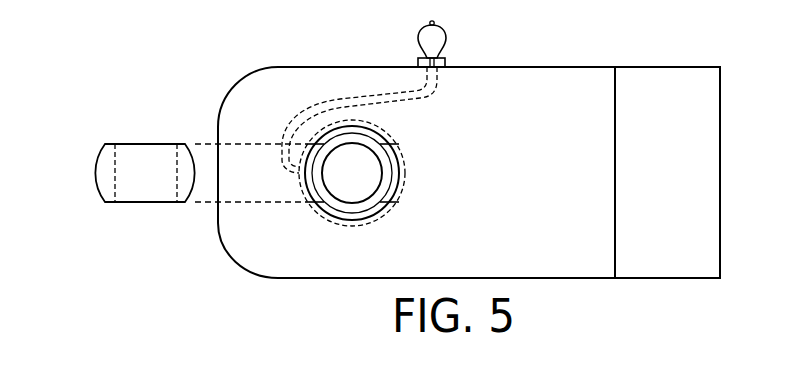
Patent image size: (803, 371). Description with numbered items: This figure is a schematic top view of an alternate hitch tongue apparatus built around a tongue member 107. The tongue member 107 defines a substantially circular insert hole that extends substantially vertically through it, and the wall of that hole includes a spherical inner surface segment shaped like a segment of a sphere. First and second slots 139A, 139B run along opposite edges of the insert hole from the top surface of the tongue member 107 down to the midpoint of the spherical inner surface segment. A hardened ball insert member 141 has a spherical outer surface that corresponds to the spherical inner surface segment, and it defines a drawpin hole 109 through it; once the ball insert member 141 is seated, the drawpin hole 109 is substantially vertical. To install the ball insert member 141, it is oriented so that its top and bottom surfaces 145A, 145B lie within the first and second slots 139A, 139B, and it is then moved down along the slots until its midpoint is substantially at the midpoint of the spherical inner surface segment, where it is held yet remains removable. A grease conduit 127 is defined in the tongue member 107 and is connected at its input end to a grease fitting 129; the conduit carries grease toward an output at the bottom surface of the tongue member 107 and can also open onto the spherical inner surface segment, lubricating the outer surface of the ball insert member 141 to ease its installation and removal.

The tongue member 107 is at (528, 67).
The drawpin hole 109 is at (154, 143).
The grease conduit 127 is at (335, 99).
The grease fitting 129 is at (445, 37).
The first slot 139A is at (400, 173).
The second slot 139B is at (300, 184).
The ball insert member 141 is at (97, 167).
The top surface of ball insert member 145A is at (133, 143).
The bottom surface of ball insert member 145B is at (133, 203).